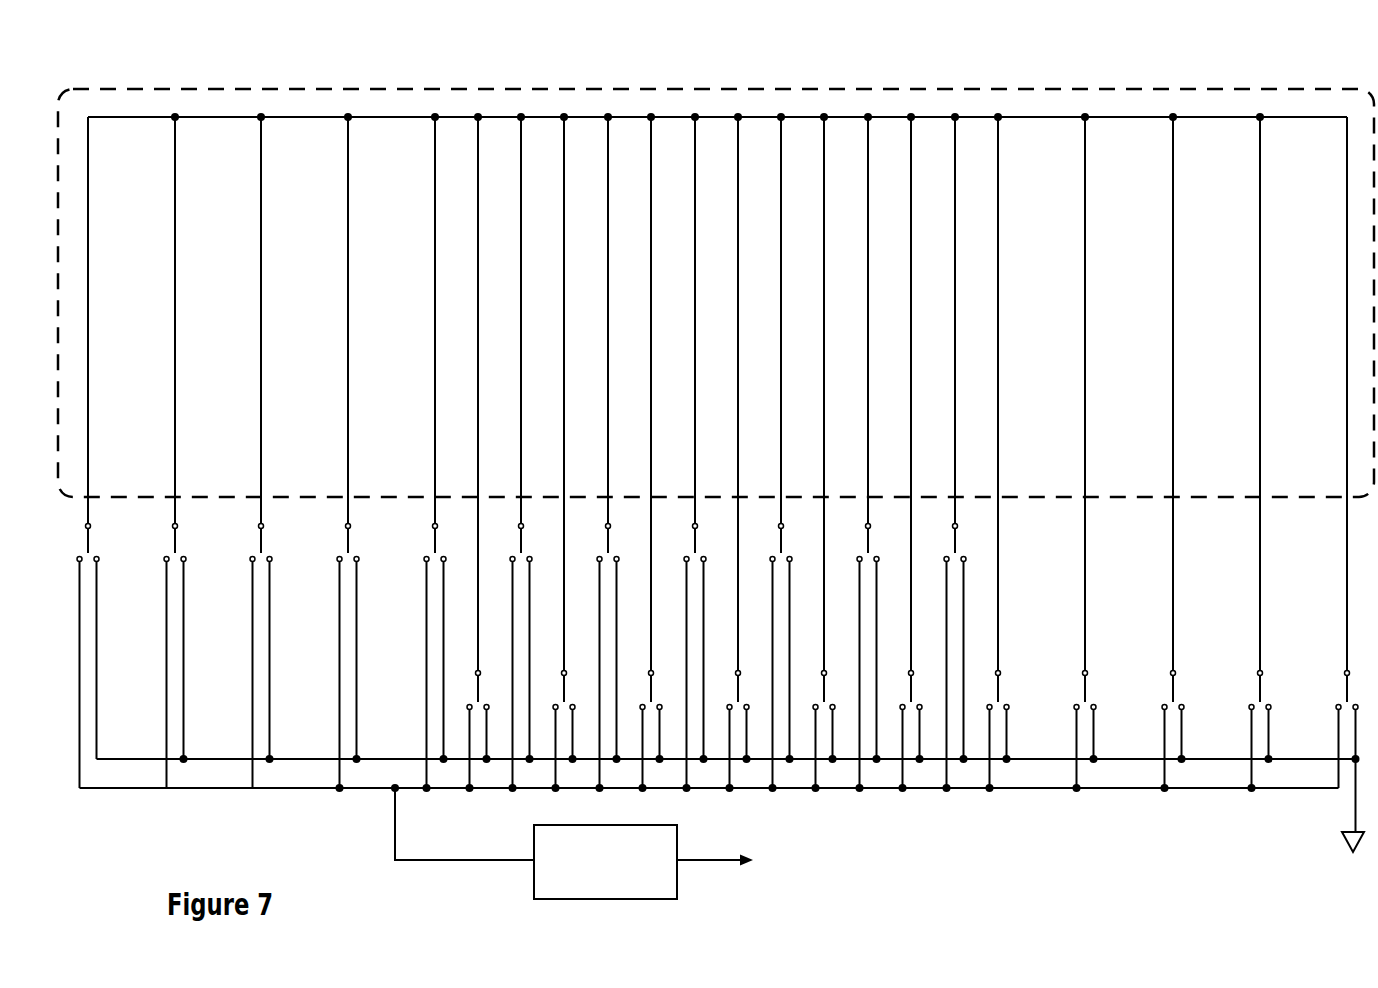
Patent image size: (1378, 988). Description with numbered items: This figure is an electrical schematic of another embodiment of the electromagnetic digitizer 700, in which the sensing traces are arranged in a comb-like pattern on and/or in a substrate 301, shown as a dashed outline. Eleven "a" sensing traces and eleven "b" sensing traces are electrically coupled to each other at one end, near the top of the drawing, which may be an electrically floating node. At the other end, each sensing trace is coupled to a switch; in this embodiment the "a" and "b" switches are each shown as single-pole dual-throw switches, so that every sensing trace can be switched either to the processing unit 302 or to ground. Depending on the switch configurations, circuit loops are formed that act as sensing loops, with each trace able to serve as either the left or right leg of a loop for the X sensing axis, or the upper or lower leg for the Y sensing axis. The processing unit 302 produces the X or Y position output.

The electromagnetic digitizer 700 is at (812, 59).
The substrate 301 is at (1013, 88).
The processing unit 302 is at (648, 843).